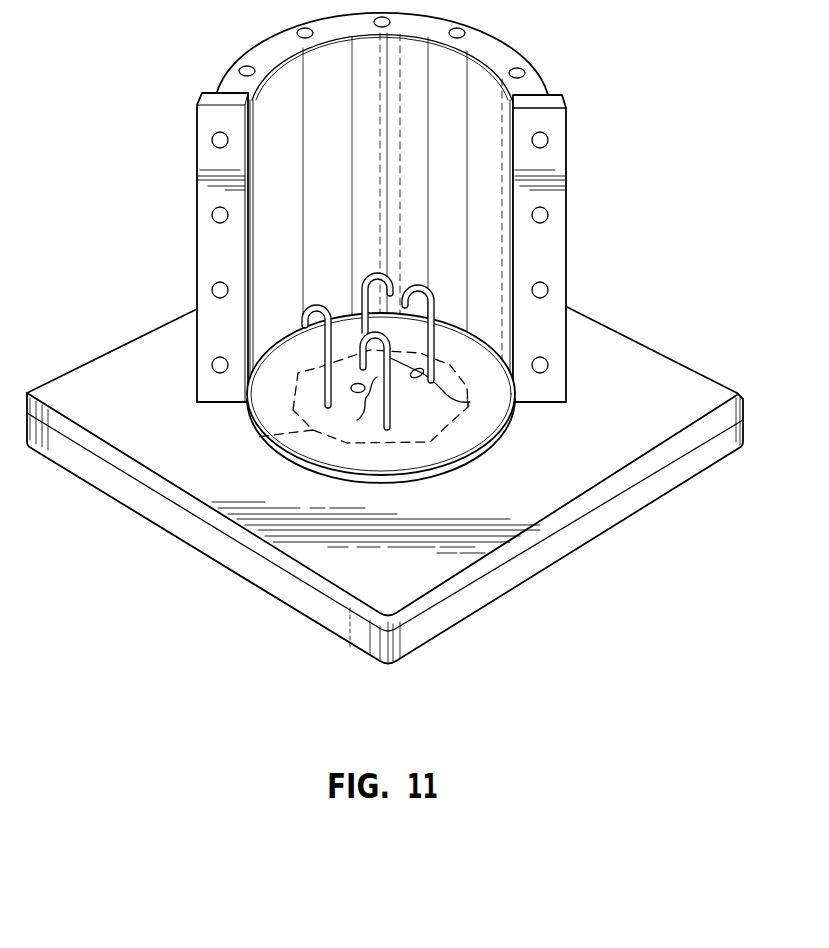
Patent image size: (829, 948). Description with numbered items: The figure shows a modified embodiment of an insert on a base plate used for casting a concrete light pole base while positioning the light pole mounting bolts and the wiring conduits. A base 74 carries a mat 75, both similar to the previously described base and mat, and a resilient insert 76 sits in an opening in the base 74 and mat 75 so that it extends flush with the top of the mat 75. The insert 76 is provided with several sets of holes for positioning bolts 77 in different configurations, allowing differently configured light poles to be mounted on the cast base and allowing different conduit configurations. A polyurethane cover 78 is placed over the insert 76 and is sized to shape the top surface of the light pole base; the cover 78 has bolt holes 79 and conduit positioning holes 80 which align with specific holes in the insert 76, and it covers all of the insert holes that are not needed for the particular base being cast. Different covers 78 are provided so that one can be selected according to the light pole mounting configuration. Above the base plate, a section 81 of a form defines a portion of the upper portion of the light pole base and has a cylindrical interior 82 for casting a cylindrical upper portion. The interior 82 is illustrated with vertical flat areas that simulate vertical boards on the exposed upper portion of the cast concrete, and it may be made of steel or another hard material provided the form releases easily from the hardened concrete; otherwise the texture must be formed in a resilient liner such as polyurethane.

The base 74 is at (507, 567).
The mat 75 is at (567, 487).
The resilient insert 76 is at (252, 445).
The bolts 77 is at (470, 402).
The polyurethane cover 78 is at (422, 476).
The bolt holes 79 is at (392, 418).
The conduit positioning holes 80 is at (367, 411).
The section of a form 81 is at (567, 163).
The cylindrical interior 82 is at (505, 215).